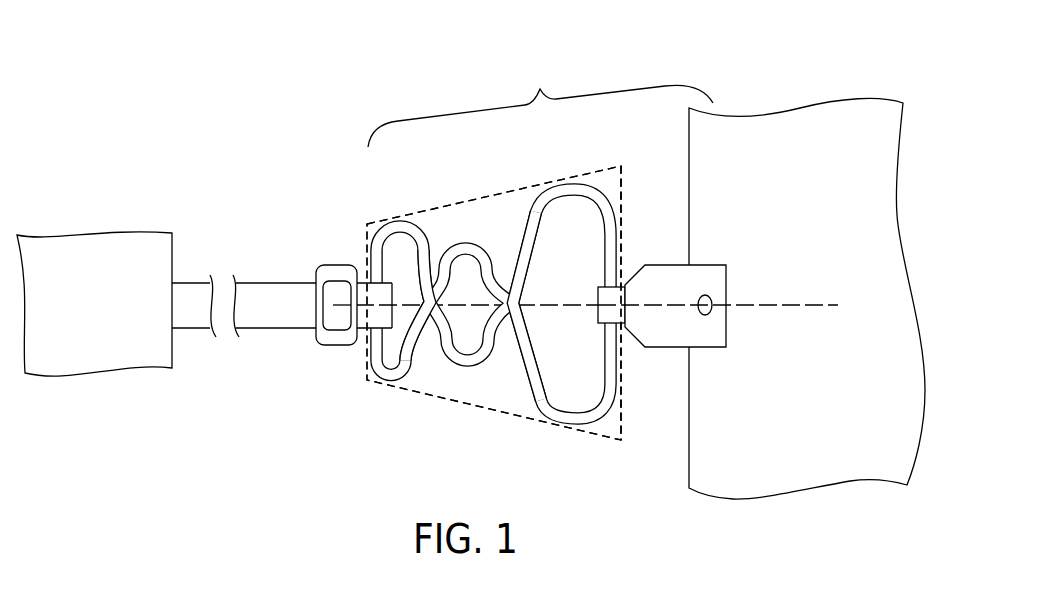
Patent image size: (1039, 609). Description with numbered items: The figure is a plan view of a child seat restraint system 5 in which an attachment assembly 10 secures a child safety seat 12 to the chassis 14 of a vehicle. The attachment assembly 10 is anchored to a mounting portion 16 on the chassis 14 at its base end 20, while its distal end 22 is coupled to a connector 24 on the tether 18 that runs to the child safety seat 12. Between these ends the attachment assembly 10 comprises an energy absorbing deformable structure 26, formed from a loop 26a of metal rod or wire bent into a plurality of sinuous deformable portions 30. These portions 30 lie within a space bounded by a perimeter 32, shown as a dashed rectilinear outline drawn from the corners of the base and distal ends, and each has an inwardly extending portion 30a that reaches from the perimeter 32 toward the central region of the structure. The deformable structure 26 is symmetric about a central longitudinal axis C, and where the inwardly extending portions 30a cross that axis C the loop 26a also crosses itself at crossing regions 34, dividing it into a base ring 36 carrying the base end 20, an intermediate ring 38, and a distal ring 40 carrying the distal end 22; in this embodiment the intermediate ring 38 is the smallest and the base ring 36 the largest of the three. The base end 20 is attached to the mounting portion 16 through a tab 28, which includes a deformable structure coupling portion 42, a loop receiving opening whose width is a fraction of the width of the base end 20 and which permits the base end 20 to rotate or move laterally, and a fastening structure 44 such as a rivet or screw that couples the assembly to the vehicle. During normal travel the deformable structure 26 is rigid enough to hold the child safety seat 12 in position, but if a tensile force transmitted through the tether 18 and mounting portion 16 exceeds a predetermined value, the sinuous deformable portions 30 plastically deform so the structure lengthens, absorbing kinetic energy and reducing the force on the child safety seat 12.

The child seat restraint system 5 is at (378, 62).
The attachment assembly 10 is at (544, 86).
The child safety seat 12 is at (112, 384).
The chassis 14 is at (822, 88).
The mounting portion 16 is at (728, 329).
The tether 18 is at (276, 330).
The base end 20 is at (624, 215).
The distal end 22 is at (369, 262).
The connector 24 is at (361, 346).
The energy absorbing deformable structure 26 is at (466, 240).
The loop 26a is at (470, 222).
The tab 28 is at (660, 360).
The sinuous deformable portions 30 is at (395, 388).
The inwardly extending portion 30a is at (416, 305).
The perimeter 32 is at (455, 408).
The crossing regions 34 is at (524, 296).
The base ring 36 is at (587, 396).
The intermediate ring 38 is at (472, 362).
The distal ring 40 is at (395, 366).
The deformable structure coupling portion 42 is at (606, 288).
The fastening structure 44 is at (706, 295).
The longitudinal axis C is at (596, 305).